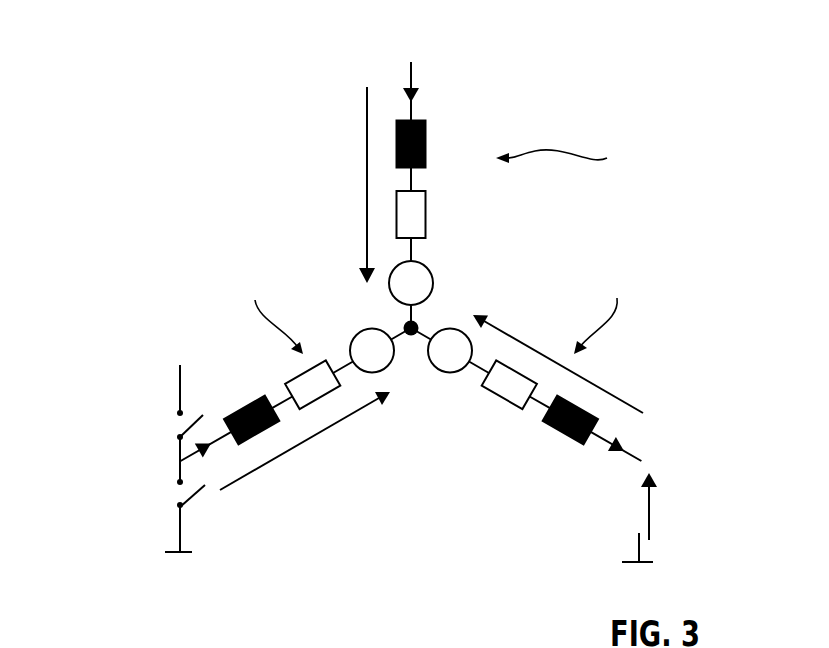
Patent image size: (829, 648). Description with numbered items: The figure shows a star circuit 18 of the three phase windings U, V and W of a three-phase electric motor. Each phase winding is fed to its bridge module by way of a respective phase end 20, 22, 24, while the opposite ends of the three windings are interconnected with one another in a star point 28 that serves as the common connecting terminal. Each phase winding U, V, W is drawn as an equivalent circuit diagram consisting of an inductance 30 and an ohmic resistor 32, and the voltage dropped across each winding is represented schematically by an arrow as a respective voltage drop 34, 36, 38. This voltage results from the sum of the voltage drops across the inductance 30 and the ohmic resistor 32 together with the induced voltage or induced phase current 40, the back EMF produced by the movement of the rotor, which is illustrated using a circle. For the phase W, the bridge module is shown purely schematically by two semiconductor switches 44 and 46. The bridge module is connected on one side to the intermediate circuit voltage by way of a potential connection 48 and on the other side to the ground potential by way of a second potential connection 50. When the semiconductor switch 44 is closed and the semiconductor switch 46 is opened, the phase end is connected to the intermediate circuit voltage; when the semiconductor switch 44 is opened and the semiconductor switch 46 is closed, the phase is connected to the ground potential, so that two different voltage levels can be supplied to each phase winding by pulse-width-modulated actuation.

The star circuit 18 is at (148, 82).
The phase end 20 is at (413, 77).
The phase end 22 is at (634, 458).
The phase end 24 is at (190, 455).
The star point 28 is at (417, 323).
The inductance 30 is at (426, 145).
The ohmic resistor 32 is at (426, 220).
The voltage drop 34 is at (366, 180).
The voltage drop 36 is at (605, 390).
The voltage drop 38 is at (300, 443).
The induced phase current 40 is at (433, 288).
The semiconductor switch 44 is at (177, 414).
The semiconductor switch 46 is at (182, 494).
The potential connection 48 is at (180, 368).
The second potential connection 50 is at (183, 555).